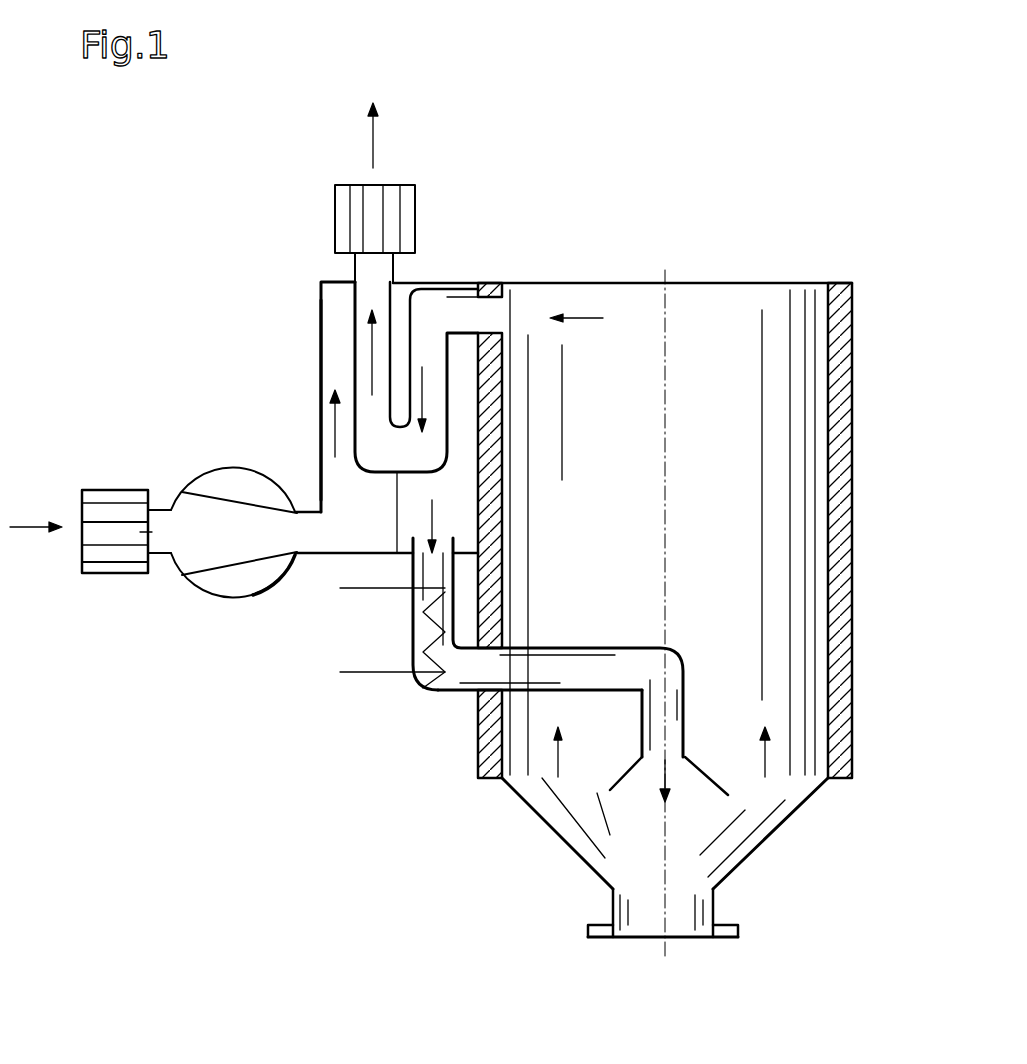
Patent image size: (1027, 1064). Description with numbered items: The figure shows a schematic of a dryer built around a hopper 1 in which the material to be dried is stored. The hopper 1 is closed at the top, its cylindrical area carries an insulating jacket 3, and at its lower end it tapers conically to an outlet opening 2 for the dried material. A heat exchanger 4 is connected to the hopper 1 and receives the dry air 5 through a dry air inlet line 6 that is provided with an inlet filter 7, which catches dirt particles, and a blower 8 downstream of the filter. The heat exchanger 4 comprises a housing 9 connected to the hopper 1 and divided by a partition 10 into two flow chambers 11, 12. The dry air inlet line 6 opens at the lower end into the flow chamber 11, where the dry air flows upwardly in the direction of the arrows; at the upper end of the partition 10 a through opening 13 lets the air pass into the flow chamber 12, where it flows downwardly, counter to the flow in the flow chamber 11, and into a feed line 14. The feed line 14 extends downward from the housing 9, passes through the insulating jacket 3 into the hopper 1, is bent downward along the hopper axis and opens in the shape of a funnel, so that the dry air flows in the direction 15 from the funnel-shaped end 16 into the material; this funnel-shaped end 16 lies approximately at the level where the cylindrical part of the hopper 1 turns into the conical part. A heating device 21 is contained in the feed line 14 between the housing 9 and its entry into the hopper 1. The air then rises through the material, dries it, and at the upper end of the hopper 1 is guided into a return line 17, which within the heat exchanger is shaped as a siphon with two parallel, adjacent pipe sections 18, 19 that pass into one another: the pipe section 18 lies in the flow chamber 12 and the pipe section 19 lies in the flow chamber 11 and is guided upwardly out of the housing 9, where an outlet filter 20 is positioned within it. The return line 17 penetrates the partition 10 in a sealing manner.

The hopper 1 is at (732, 325).
The outlet opening 2 is at (648, 908).
The insulating jacket 3 is at (853, 482).
The heat exchanger 4 is at (330, 302).
The dry air 5 is at (50, 524).
The dry air inlet line 6 is at (310, 535).
The inlet filter 7 is at (113, 547).
The blower 8 is at (220, 555).
The housing 9 is at (320, 367).
The partition 10 is at (397, 512).
The flow chamber 11 is at (350, 485).
The flow chamber 12 is at (457, 427).
The through opening 13 is at (395, 300).
The feed line 14 is at (445, 700).
The flow direction 15 is at (663, 770).
The funnel-shaped end 16 is at (620, 778).
The return line 17 is at (459, 311).
The pipe section 18 is at (428, 397).
The pipe section 19 is at (368, 358).
The outlet filter 20 is at (360, 212).
The heating device 21 is at (430, 672).